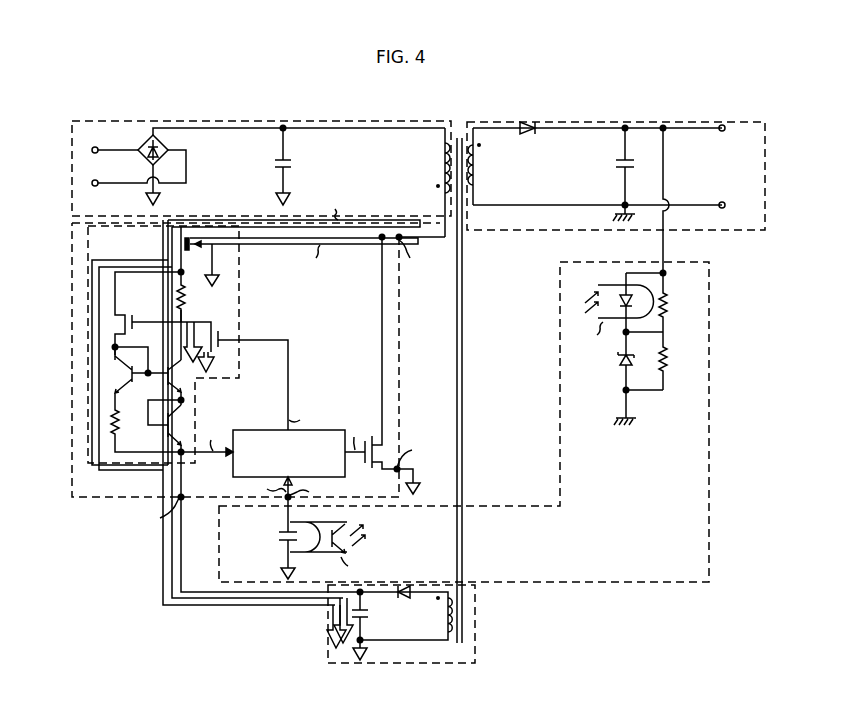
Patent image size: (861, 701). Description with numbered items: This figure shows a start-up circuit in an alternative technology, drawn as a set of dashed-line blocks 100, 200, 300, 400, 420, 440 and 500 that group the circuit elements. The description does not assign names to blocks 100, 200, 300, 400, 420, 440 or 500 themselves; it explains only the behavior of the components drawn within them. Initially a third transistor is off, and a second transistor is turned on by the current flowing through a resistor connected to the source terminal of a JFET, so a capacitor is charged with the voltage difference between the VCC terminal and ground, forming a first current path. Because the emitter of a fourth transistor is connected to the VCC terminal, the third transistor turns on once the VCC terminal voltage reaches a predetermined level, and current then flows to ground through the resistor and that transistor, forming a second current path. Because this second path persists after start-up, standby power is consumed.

The input rectifier unit 100 is at (72, 180).
The output unit 200 is at (765, 178).
The feedback unit 300 is at (710, 420).
The primary control unit 400 is at (72, 297).
The PWM controller 420 is at (256, 430).
The start-up / regulating circuit 440 is at (240, 290).
The auxiliary power unit 500 is at (328, 625).